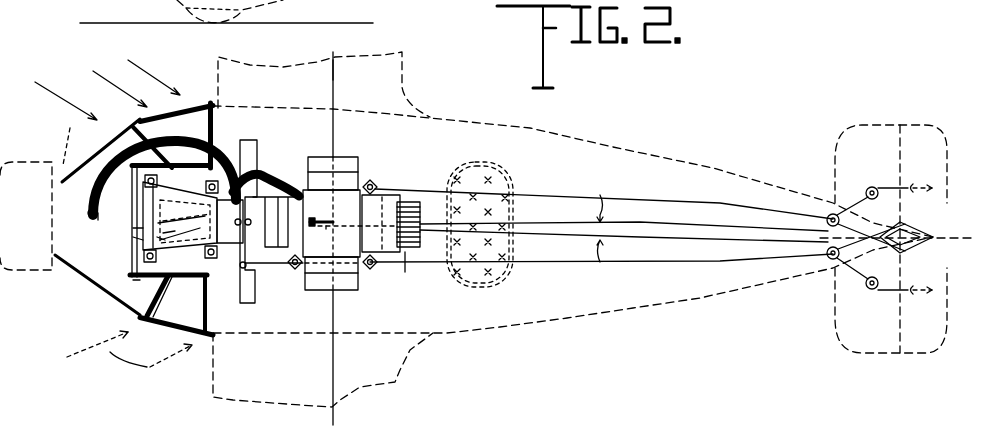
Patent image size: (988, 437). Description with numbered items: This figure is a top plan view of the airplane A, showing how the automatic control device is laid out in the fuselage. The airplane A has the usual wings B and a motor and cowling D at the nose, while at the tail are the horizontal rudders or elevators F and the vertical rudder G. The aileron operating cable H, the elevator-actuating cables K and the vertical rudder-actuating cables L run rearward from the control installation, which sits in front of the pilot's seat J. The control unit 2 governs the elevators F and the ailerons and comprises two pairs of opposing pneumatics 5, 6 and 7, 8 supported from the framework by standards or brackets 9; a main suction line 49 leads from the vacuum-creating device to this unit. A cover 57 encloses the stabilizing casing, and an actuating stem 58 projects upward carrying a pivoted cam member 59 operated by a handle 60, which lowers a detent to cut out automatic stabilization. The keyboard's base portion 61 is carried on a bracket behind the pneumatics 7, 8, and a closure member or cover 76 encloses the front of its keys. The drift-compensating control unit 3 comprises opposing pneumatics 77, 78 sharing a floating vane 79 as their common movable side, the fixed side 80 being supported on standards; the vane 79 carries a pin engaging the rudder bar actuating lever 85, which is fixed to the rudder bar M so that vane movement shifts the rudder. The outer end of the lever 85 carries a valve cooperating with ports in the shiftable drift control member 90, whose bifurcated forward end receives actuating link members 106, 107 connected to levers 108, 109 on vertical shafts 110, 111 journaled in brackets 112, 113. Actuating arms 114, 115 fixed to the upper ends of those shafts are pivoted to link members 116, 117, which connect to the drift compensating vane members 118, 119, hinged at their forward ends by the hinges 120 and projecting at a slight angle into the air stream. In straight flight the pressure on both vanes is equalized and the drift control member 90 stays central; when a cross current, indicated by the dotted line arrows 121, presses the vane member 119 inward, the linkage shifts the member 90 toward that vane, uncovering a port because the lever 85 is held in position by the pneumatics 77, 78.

The control unit 2 is at (322, 203).
The drift-compensating control unit 3 is at (163, 233).
The pneumatic 5 is at (350, 196).
The pneumatic 6 is at (345, 283).
The pneumatic 7 is at (276, 207).
The pneumatic 8 is at (390, 205).
The standards or brackets 9 is at (372, 182).
The main suction line 49 is at (266, 150).
The cover 57 is at (343, 197).
The actuating stem 58 is at (327, 225).
The actuating cam member 59 is at (335, 228).
The handle 60 is at (326, 228).
The base portion 61 is at (410, 272).
The closure member or cover 76 is at (400, 192).
The pneumatic 77 is at (157, 237).
The pneumatic 78 is at (163, 197).
The floating vane 79 is at (210, 213).
The fixed side 80 is at (203, 257).
The rudder bar actuating lever 85 is at (133, 237).
The drift control member 90 is at (88, 212).
The actuating link member 106 is at (110, 188).
The actuating link member 107 is at (133, 232).
The lever 108 is at (113, 160).
The lever 109 is at (133, 280).
The vertical shaft 110 is at (172, 151).
The vertical shaft 111 is at (170, 297).
The bracket 112 is at (160, 139).
The bracket 113 is at (146, 283).
The actuating arm 114 is at (205, 181).
The actuating arm 115 is at (168, 264).
The link member 116 is at (213, 114).
The link member 117 is at (207, 315).
The drift compensating vane member 118 is at (191, 105).
The drift compensating vane member 119 is at (113, 213).
The hinge 120 is at (146, 118).
The dotted line arrows 121 is at (110, 352).
The airplane A is at (241, 156).
The wings B is at (225, 67).
The motor and cowling D is at (36, 262).
The horizontal rudders or elevators F is at (926, 132).
The vertical rudder G is at (943, 240).
The aileron operating cable H is at (345, 82).
The pilot's seat J is at (495, 280).
The elevator-actuating cables K is at (597, 228).
The vertical rudder-actuating cables L is at (680, 200).
The rudder bar M is at (245, 290).